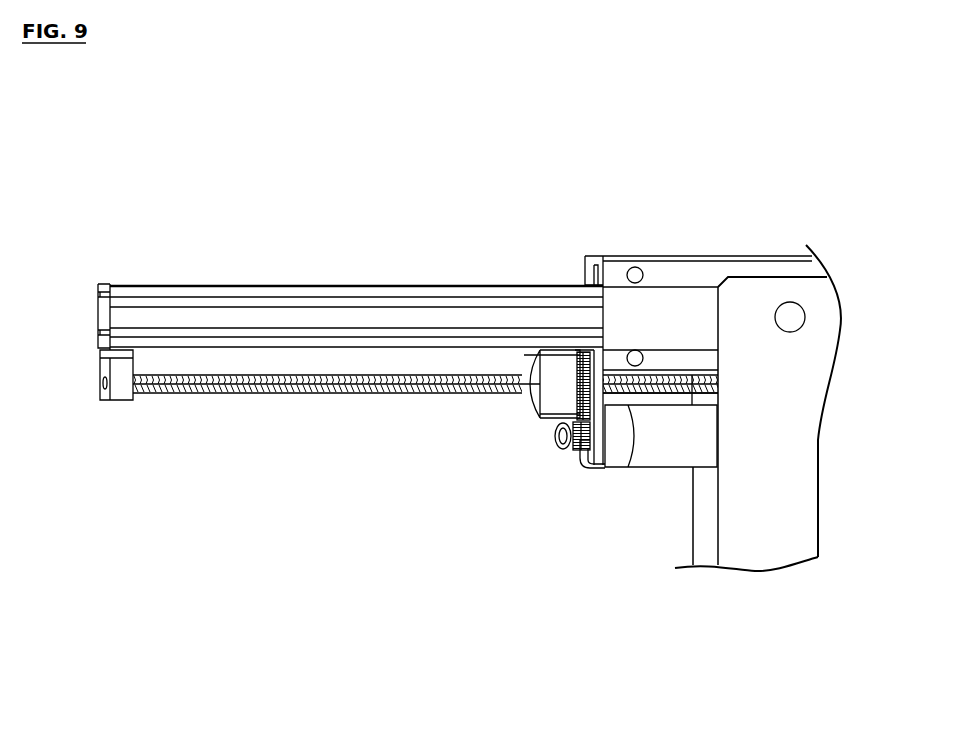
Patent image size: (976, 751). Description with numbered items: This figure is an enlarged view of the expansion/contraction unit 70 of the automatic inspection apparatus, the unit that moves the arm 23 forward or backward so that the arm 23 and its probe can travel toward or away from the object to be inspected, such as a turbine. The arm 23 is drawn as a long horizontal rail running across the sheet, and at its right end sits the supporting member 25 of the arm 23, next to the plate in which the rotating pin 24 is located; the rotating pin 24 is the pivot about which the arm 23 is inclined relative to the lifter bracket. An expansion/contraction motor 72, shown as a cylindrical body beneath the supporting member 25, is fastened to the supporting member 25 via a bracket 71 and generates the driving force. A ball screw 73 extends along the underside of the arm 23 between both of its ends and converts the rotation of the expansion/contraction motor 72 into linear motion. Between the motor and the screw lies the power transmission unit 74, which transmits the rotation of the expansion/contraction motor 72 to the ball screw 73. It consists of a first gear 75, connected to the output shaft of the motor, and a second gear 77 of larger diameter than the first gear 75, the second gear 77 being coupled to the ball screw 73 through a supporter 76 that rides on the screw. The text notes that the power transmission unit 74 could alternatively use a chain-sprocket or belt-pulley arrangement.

The arm 23 is at (336, 287).
The rotating pin 24 is at (793, 318).
The supporting member 25 is at (668, 275).
The expansion/contraction unit 70 is at (778, 379).
The bracket 71 is at (597, 455).
The expansion/contraction motor 72 is at (650, 458).
The ball screw 73 is at (290, 396).
The power transmission unit 74 is at (557, 511).
The first gear 75 is at (568, 436).
The supporter 76 is at (560, 393).
The second gear 77 is at (578, 397).